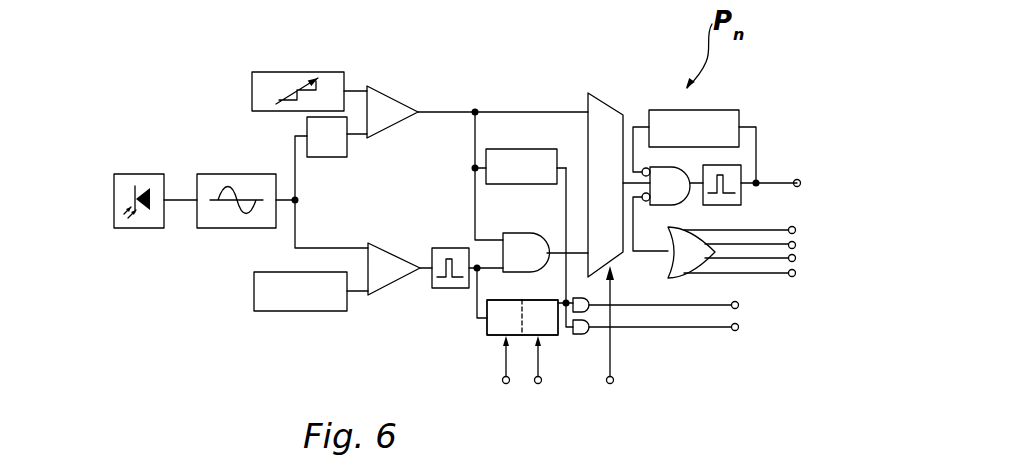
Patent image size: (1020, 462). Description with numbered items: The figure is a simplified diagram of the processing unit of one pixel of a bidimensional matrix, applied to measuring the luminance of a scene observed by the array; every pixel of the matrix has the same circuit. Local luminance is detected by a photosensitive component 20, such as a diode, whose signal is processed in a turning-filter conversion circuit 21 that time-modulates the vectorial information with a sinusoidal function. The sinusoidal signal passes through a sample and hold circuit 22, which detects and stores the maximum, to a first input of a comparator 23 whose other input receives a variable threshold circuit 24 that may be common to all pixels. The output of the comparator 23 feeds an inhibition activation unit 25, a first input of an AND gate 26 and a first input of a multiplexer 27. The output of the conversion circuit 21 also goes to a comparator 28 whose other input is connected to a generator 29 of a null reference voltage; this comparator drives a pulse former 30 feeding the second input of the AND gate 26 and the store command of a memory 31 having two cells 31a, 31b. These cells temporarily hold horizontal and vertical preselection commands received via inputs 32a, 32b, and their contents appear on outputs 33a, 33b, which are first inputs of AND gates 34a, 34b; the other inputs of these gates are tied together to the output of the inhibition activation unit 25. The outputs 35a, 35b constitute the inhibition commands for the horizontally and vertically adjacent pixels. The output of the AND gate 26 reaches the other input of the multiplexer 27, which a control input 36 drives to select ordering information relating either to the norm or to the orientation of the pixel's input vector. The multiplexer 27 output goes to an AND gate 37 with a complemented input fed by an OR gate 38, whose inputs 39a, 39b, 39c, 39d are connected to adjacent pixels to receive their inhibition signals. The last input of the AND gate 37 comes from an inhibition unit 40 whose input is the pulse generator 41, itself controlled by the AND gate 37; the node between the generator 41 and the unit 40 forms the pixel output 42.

The photosensitive component 20 is at (125, 230).
The conversion circuit 21 is at (246, 173).
The sample and hold circuit 22 is at (324, 146).
The comparator 23 is at (388, 105).
The variable threshold circuit 24 is at (340, 72).
The inhibition activation unit 25 is at (523, 158).
The AND gate 26 is at (527, 250).
The multiplexer 27 is at (610, 108).
The comparator 28 is at (393, 280).
The generator of a null reference voltage 29 is at (298, 312).
The pulse former 30 is at (441, 248).
The memory 31 is at (492, 347).
The memory cell 31a is at (486, 332).
The memory cell 31b is at (545, 325).
The input 32a is at (503, 384).
The input 32b is at (538, 384).
The output 33a is at (557, 300).
The output 33b is at (567, 335).
The AND gate 34a is at (590, 301).
The AND gate 34b is at (591, 329).
The output 35a is at (739, 308).
The output 35b is at (739, 330).
The control input 36 is at (614, 384).
The AND gate 37 is at (655, 168).
The OR gate 38 is at (690, 247).
The input 39a is at (796, 228).
The input 39b is at (796, 244).
The input 39c is at (796, 258).
The input 39d is at (796, 276).
The inhibition unit 40 is at (718, 110).
The pulse generator 41 is at (743, 176).
The output 42 is at (801, 182).